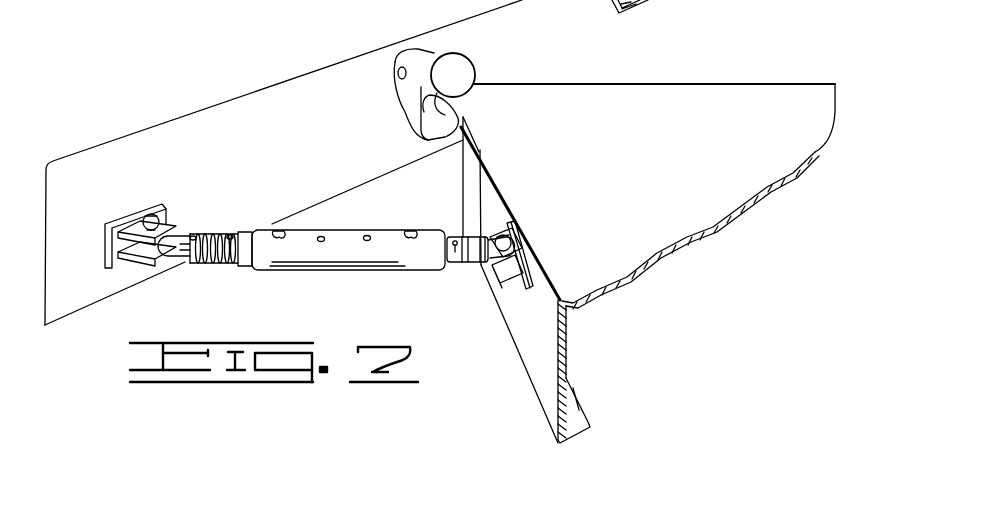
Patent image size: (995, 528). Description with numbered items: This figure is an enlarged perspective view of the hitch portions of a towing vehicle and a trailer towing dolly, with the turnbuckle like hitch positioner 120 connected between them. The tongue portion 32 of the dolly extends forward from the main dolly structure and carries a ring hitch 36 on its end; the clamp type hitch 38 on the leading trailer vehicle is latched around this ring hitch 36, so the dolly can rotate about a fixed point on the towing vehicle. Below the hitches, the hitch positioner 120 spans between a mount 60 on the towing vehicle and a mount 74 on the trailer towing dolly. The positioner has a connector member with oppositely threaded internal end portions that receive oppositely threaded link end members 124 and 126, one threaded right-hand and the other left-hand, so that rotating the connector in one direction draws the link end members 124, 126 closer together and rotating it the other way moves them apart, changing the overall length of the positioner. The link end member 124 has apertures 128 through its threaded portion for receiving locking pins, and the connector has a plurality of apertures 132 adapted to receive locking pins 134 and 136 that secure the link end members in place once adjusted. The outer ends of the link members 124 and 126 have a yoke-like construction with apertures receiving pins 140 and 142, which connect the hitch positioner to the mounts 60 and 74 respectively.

The turnbuckle like hitch positioner 120 is at (272, 136).
The pin 140 is at (155, 213).
The mount 60 is at (106, 243).
The apertures 128 is at (196, 236).
The locking pin 134 is at (311, 192).
The apertures 132 is at (322, 237).
The locking pin 136 is at (412, 231).
The pin 142 is at (508, 227).
The mount 74 is at (532, 255).
The link end member 124 is at (222, 265).
The link end member 126 is at (470, 264).
The clamp type hitch 38 is at (485, 36).
The ring hitch 36 is at (400, 103).
The tongue portion 32 is at (530, 93).